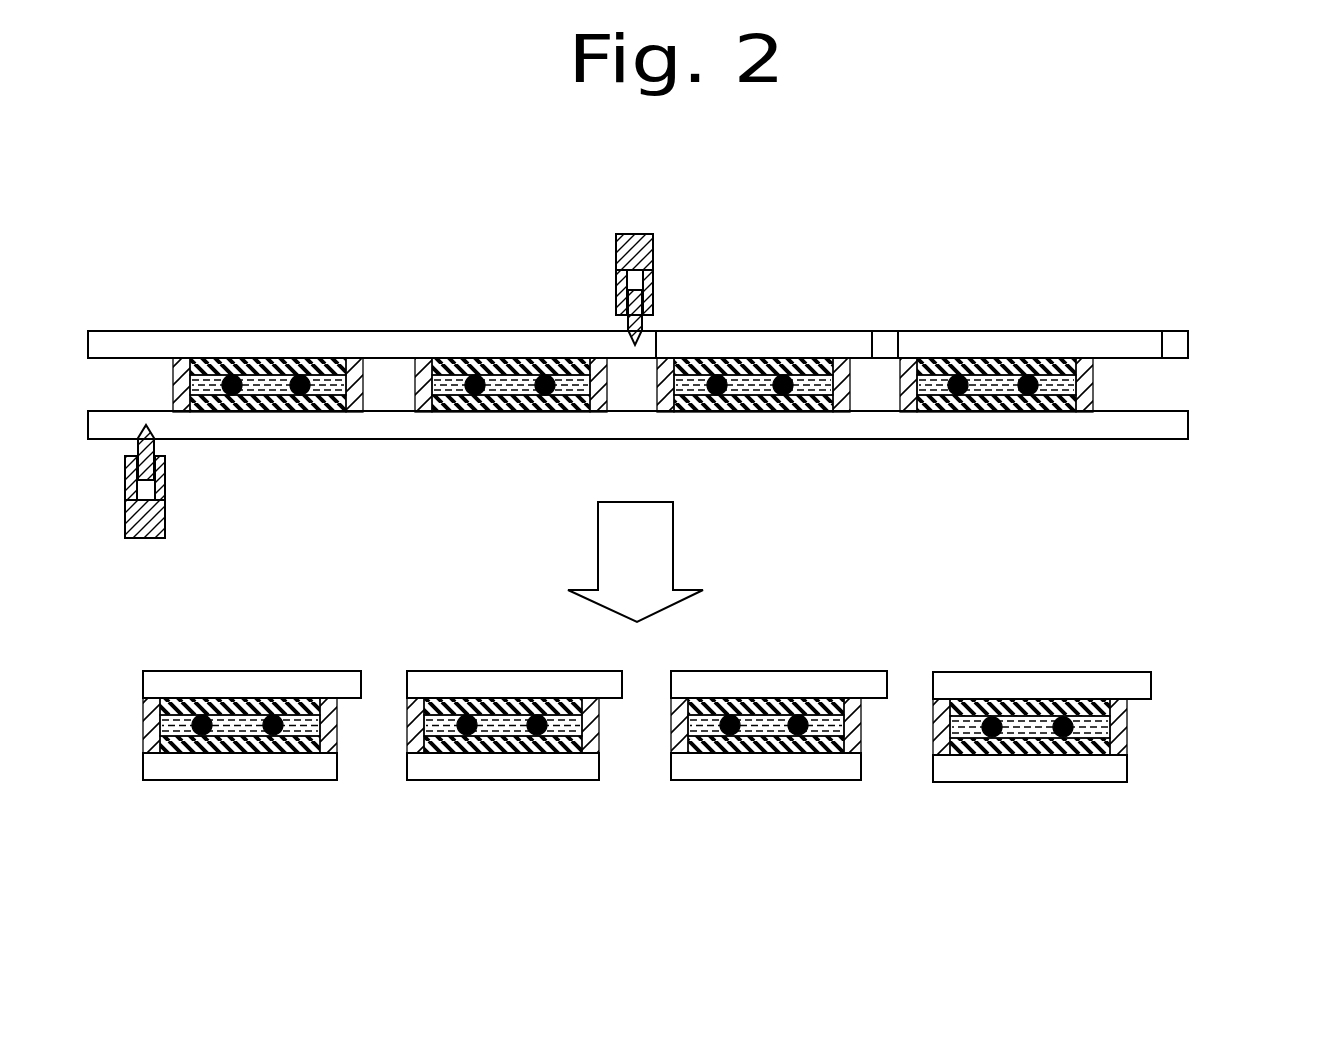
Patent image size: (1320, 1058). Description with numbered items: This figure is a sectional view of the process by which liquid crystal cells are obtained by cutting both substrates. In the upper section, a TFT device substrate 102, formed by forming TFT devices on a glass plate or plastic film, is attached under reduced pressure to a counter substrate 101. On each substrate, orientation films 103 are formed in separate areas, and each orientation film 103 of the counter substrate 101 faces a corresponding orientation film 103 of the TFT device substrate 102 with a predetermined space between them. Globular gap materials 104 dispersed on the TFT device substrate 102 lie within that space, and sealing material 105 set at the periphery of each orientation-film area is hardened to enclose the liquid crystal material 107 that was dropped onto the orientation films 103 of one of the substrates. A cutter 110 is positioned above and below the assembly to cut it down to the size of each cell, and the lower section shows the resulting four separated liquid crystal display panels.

The counter substrate 101 is at (1077, 430).
The TFT device substrate 102 is at (1127, 300).
The orientation film 103 is at (950, 370).
The gap material 104 is at (301, 395).
The sealing material 105 is at (360, 374).
The liquid crystal material 107 is at (510, 803).
The cutter 110 is at (653, 298).